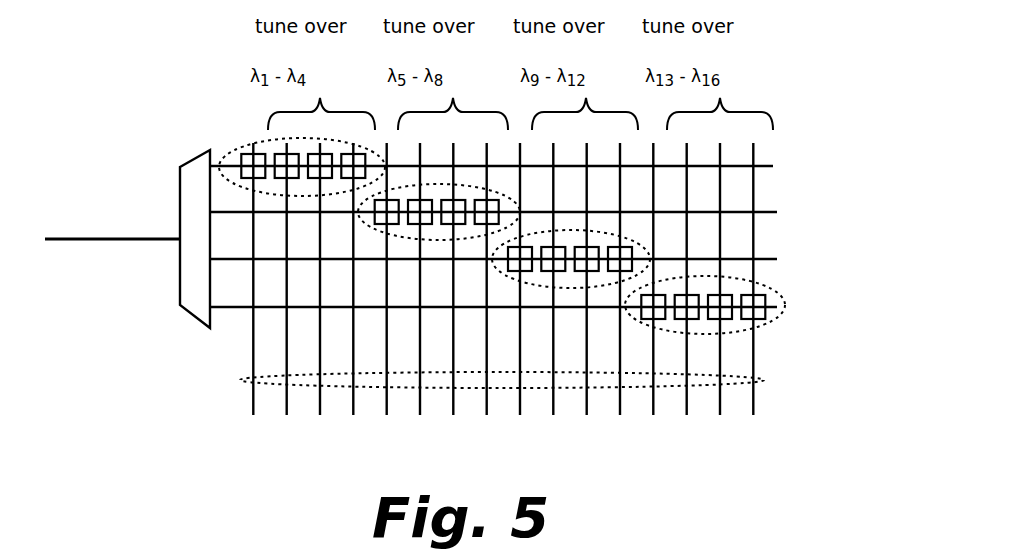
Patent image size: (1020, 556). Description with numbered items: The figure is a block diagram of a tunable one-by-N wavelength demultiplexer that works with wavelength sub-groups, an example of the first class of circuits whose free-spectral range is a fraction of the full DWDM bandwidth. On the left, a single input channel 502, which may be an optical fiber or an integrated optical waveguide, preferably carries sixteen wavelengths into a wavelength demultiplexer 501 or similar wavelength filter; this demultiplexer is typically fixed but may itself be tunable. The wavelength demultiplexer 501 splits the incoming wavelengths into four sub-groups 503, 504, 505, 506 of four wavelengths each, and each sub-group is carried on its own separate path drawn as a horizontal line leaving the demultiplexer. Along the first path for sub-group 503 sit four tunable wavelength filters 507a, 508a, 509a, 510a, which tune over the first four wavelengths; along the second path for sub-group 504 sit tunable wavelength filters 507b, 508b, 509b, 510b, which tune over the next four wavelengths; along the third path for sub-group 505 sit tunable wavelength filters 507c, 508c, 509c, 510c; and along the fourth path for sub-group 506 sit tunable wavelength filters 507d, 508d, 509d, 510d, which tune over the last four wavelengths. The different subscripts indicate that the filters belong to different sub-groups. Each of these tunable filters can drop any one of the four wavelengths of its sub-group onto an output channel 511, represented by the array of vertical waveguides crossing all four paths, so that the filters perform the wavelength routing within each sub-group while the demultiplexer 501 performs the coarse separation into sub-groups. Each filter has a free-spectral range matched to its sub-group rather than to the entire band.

The wavelength demultiplexer 501 is at (195, 317).
The input channel 502 is at (125, 243).
The sub-group 503 is at (773, 165).
The sub-group 504 is at (777, 212).
The sub-group 505 is at (777, 259).
The sub-group 506 is at (778, 300).
The tunable wavelength filter 507a is at (281, 196).
The tunable wavelength filter 508a is at (287, 166).
The tunable wavelength filter 509a is at (320, 166).
The tunable wavelength filter 510a is at (353, 166).
The tunable wavelength filter 507b is at (432, 240).
The tunable wavelength filter 508b is at (420, 212).
The tunable wavelength filter 509b is at (453, 212).
The tunable wavelength filter 510b is at (487, 212).
The tunable wavelength filter 507c is at (597, 286).
The tunable wavelength filter 508c is at (553, 259).
The tunable wavelength filter 509c is at (587, 259).
The tunable wavelength filter 510c is at (620, 259).
The tunable wavelength filter 507d is at (760, 325).
The tunable wavelength filter 508d is at (687, 307).
The tunable wavelength filter 509d is at (720, 307).
The tunable wavelength filter 510d is at (753, 307).
The output channel 511 is at (240, 380).